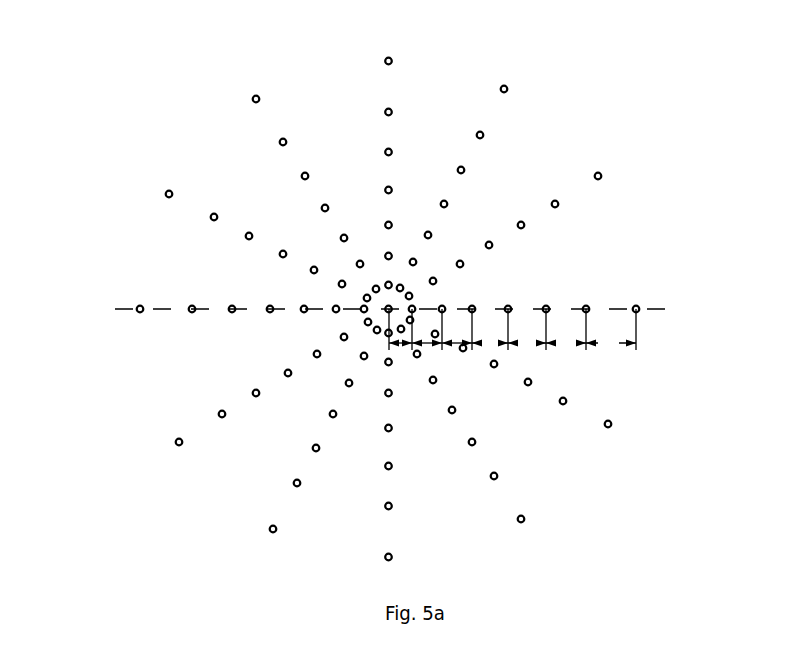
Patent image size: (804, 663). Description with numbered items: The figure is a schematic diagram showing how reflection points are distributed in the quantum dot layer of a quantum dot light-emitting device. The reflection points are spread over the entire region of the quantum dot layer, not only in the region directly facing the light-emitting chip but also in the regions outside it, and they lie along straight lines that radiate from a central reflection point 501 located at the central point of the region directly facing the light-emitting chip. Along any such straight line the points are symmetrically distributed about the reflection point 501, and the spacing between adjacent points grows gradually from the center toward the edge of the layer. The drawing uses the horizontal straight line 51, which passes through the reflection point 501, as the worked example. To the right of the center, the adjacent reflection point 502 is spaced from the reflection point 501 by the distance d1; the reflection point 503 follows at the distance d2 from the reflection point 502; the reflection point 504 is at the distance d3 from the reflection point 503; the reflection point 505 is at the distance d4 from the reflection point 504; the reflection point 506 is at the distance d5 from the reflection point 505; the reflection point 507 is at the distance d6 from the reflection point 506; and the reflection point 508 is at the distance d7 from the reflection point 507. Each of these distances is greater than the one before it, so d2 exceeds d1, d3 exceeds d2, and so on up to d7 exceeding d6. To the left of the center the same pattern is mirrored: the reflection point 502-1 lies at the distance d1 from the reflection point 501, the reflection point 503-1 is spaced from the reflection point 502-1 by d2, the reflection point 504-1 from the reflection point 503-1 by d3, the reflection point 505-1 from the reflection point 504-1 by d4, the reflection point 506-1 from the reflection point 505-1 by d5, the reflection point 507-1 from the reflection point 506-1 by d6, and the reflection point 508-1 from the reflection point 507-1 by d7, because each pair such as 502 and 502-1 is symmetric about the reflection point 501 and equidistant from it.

The straight line 51 is at (116, 311).
The reflection point 501 is at (390, 306).
The reflection point 502 is at (413, 306).
The reflection point 503 is at (442, 306).
The reflection point 504 is at (474, 306).
The reflection point 505 is at (508, 306).
The reflection point 506 is at (547, 306).
The reflection point 507 is at (586, 306).
The reflection point 508 is at (637, 306).
The reflection point 502-1 is at (364, 306).
The reflection point 503-1 is at (337, 306).
The reflection point 504-1 is at (306, 306).
The reflection point 505-1 is at (270, 312).
The reflection point 506-1 is at (232, 306).
The reflection point 507-1 is at (192, 311).
The reflection point 508-1 is at (140, 307).
The distance d1 is at (400, 348).
The distance d2 is at (432, 348).
The distance d3 is at (455, 348).
The distance d4 is at (490, 343).
The distance d5 is at (527, 343).
The distance d6 is at (566, 343).
The distance d7 is at (611, 343).